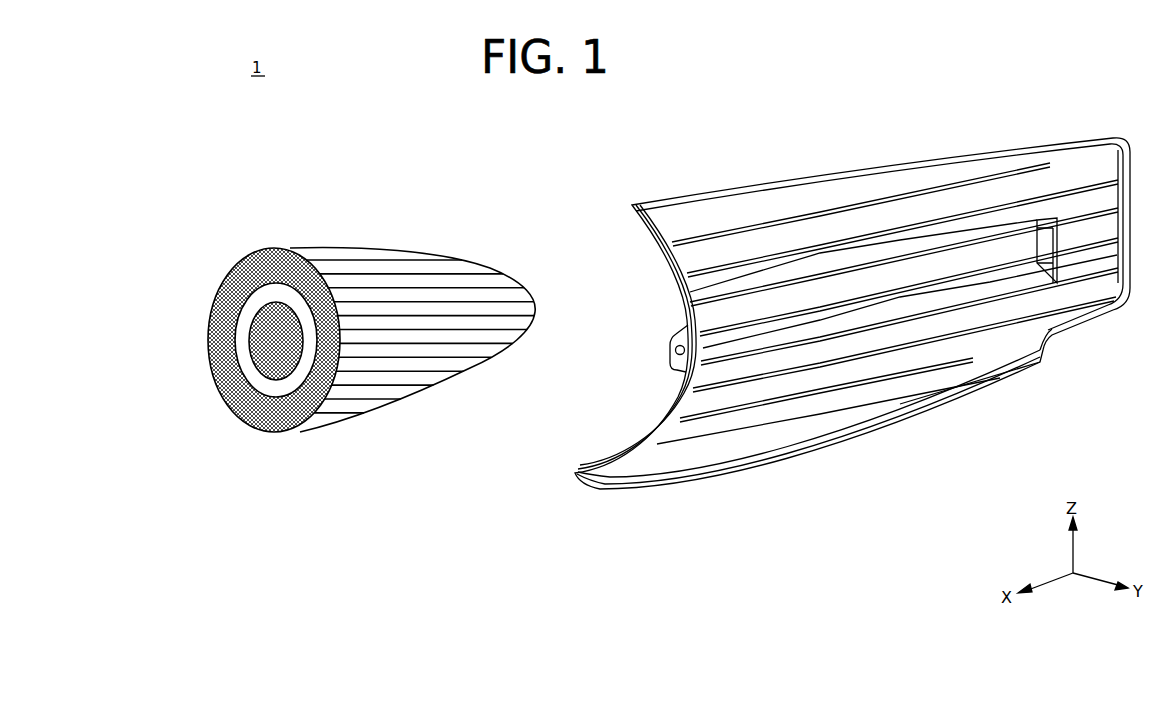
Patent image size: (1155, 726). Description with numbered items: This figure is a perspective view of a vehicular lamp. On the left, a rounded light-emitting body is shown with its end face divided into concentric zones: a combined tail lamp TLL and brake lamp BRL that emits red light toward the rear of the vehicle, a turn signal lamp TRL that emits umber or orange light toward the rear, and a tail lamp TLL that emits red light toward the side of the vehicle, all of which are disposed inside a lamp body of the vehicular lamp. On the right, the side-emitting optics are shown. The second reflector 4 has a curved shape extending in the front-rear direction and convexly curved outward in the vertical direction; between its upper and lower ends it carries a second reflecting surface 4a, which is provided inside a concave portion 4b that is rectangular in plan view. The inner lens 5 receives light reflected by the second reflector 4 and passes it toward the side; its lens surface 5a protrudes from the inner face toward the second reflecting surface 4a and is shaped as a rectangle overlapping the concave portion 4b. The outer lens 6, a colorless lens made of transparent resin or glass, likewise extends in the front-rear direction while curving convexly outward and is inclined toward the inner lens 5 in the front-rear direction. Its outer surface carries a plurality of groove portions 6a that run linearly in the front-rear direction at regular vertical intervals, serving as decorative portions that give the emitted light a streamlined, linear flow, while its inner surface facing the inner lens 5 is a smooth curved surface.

The second reflector 4 is at (583, 462).
The second reflecting surface 4a is at (1047, 250).
The concave portion 4b is at (807, 260).
The inner lens 5 is at (621, 458).
The lens surface 5a is at (858, 277).
The outer lens 6 is at (650, 440).
The groove portions 6a is at (1008, 325).
The turn signal lamp TRL is at (227, 388).
The tail lamp TLL is at (408, 365).
The brake lamp BRL is at (272, 360).